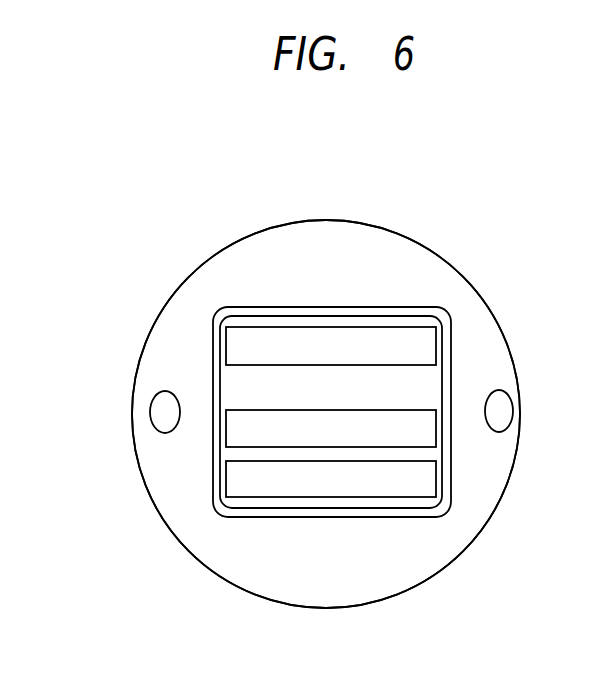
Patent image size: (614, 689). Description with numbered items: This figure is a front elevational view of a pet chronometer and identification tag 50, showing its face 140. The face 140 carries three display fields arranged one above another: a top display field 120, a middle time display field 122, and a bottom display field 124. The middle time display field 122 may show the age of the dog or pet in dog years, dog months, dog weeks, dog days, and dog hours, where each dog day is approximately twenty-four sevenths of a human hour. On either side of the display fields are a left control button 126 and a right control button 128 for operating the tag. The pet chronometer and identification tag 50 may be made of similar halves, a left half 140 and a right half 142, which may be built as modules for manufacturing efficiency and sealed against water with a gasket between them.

The pet chronometer and identification tag 50 is at (109, 197).
The top display field 120 is at (436, 345).
The middle time display field 122 is at (436, 430).
The bottom display field 124 is at (437, 478).
The left control button 126 is at (165, 433).
The right control button 128 is at (500, 389).
The face 140 is at (392, 247).
The right half 142 is at (413, 572).